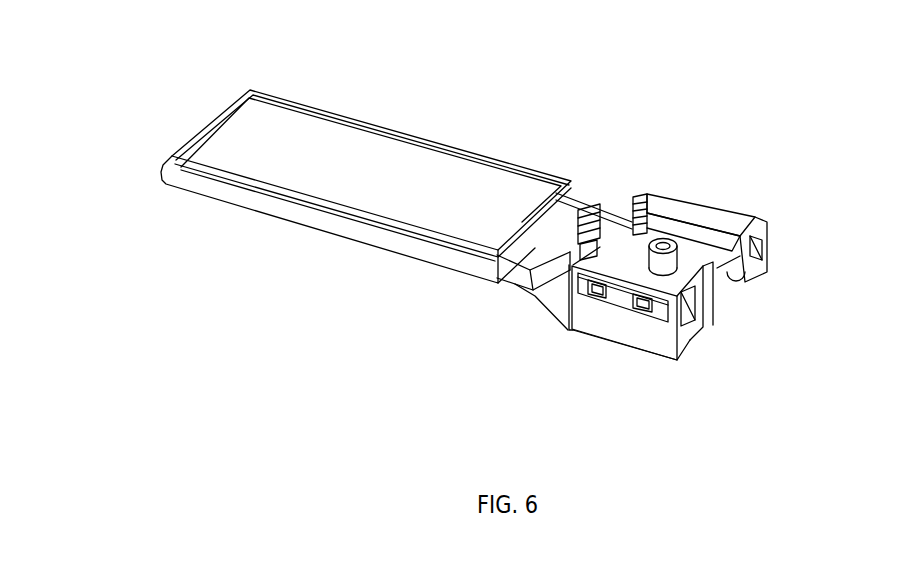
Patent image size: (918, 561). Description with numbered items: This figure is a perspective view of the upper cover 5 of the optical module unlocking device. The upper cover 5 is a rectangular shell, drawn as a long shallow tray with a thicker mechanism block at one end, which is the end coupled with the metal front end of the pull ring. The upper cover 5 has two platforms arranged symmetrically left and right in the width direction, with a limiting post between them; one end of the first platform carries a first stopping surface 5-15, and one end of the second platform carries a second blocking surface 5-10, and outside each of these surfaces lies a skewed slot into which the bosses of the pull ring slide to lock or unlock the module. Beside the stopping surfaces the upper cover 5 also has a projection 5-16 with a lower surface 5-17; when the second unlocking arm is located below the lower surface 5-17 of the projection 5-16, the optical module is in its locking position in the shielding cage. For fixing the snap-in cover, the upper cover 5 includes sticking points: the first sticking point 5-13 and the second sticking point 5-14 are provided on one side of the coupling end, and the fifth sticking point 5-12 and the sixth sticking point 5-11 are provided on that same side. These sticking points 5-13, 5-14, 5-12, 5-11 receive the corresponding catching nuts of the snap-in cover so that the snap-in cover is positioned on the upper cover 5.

The upper cover 5 is at (506, 138).
The second blocking surface 5-10 is at (661, 212).
The sixth sticking point 5-11 is at (760, 240).
The fifth sticking point 5-12 is at (695, 314).
The first sticking point 5-13 is at (638, 312).
The second sticking point 5-14 is at (592, 287).
The first stopping surface 5-15 is at (570, 262).
The projection 5-16 is at (568, 237).
The lower surface 5-17 is at (583, 193).